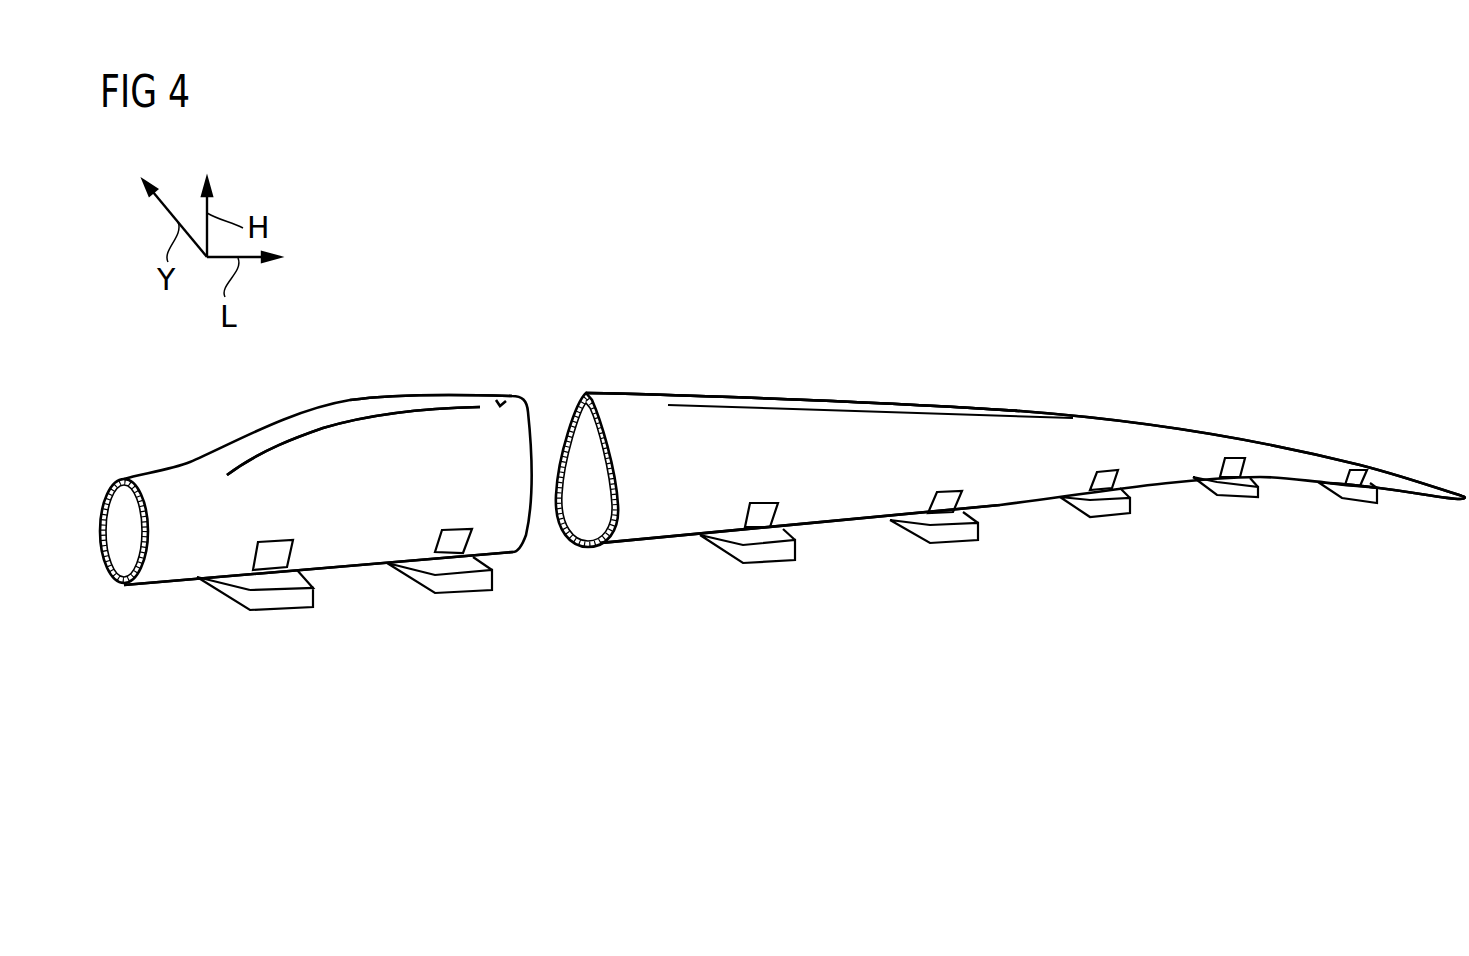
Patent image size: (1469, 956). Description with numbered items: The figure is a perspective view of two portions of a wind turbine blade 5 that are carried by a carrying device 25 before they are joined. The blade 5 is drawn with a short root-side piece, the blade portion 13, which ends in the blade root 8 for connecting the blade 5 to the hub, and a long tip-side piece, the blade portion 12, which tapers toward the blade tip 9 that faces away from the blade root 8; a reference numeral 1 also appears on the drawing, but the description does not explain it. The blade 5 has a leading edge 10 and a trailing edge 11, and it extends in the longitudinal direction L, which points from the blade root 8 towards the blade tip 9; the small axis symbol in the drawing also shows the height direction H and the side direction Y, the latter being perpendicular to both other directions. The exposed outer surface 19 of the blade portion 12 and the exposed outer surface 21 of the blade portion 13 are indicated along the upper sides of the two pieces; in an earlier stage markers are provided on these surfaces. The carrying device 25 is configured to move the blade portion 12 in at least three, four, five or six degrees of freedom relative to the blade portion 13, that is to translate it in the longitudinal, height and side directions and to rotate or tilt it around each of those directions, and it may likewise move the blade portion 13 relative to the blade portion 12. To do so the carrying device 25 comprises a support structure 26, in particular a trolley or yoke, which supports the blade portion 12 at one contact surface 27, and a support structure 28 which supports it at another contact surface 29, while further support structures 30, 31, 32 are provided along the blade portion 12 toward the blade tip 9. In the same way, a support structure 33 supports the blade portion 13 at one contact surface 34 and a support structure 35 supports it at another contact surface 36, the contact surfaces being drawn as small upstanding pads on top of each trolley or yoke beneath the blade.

The wind turbine rotor blade 1 is at (643, 540).
The blade 5 is at (966, 324).
The blade root 8 is at (118, 478).
The blade tip 9 is at (1457, 485).
The leading edge 10 is at (350, 568).
The trailing edge 11 is at (320, 405).
The blade portion 12 is at (723, 380).
The blade portion 13 is at (414, 382).
The outer surface 19 is at (838, 415).
The outer surface 21 is at (497, 400).
The carrying device 25 is at (882, 590).
The support structure 26 is at (775, 565).
The contact surface 27 is at (750, 522).
The support structure 28 is at (957, 545).
The contact surface 29 is at (937, 507).
The support structure 30 is at (1112, 517).
The support structure 31 is at (1245, 498).
The support structure 32 is at (1360, 503).
The support structure 33 is at (463, 598).
The contact surface 34 is at (443, 546).
The support structure 35 is at (283, 617).
The contact surface 36 is at (258, 558).